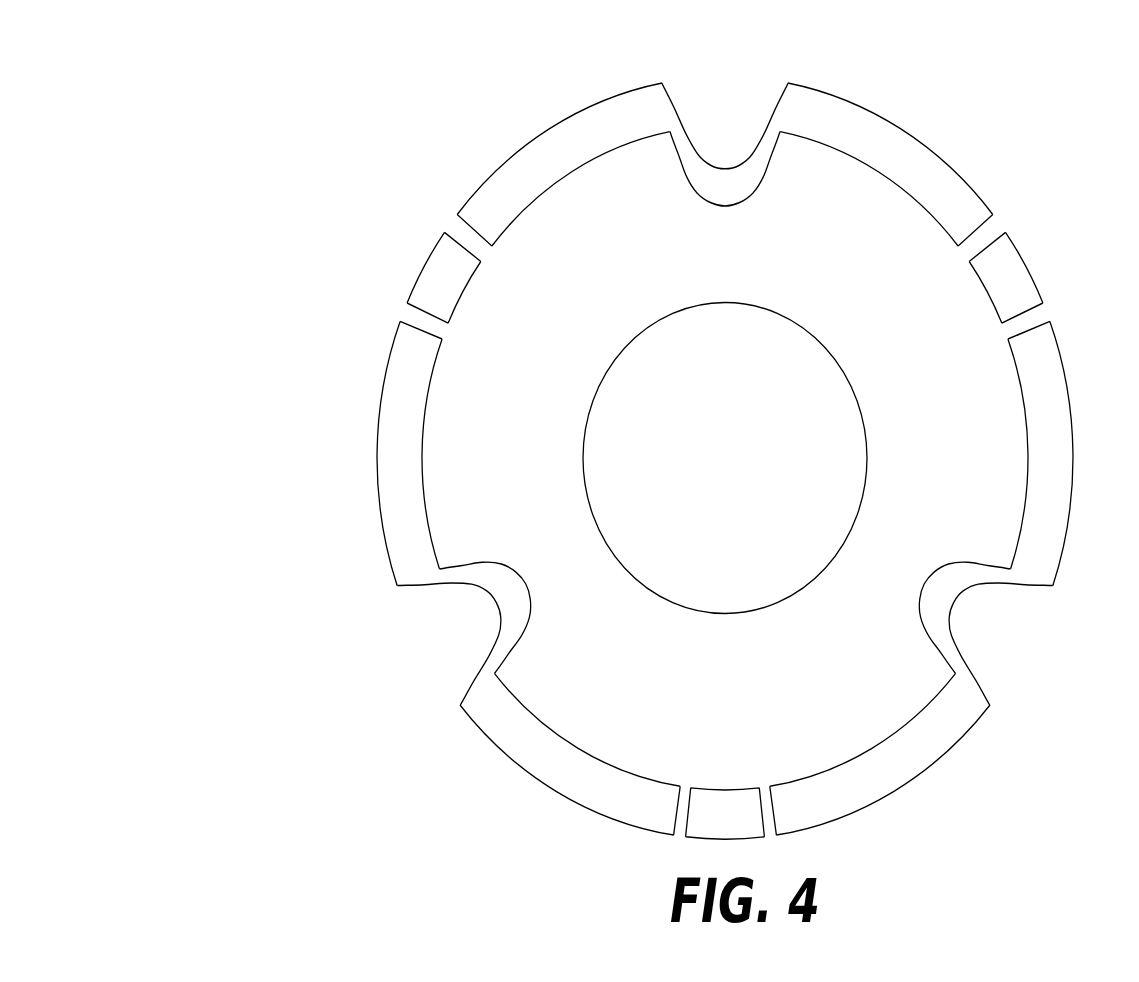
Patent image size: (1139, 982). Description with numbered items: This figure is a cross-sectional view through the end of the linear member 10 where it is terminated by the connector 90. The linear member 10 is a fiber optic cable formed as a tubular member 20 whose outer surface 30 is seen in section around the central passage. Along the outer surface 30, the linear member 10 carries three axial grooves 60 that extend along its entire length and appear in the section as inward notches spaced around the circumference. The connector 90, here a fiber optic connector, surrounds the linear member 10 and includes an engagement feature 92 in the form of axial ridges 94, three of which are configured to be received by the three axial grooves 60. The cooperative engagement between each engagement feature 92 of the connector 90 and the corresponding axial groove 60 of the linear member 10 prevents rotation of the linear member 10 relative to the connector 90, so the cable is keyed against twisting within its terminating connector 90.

The connector 90 is at (196, 155).
The linear member 10 is at (458, 288).
The tubular member 20 is at (615, 743).
The outer surface 30 is at (934, 215).
The axial groove 60 is at (725, 188).
The engagement feature 92 is at (752, 100).
The axial ridge 94 is at (701, 128).